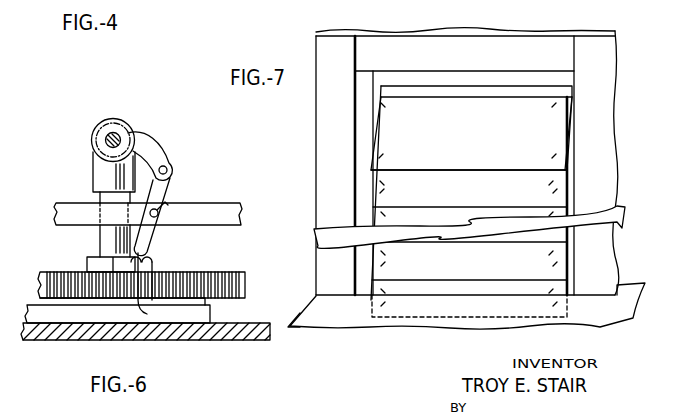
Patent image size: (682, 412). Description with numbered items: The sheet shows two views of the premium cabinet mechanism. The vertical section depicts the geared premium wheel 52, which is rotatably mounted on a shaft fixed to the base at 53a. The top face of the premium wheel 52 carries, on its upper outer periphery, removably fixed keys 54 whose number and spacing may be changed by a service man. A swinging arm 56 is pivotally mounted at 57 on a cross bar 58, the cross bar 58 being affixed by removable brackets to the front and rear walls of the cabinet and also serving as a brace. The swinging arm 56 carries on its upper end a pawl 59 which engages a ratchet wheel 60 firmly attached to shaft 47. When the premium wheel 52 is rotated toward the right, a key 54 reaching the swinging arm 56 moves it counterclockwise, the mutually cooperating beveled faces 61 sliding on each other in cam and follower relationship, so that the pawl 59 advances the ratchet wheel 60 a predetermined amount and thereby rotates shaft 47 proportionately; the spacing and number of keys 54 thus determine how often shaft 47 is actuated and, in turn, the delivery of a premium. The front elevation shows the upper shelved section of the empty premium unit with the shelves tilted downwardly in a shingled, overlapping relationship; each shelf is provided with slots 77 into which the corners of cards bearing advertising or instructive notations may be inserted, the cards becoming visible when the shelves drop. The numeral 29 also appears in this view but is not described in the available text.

In FIG. 6, the shaft 47 is at (108, 139).
In FIG. 6, the ratchet wheel 60 is at (117, 126).
In FIG. 6, the pawl 59 is at (160, 155).
In FIG. 6, the pivot 57 is at (165, 202).
In FIG. 6, the cross bar 58 is at (229, 210).
In FIG. 6, the key 54 is at (125, 262).
In FIG. 6, the swinging arm 56 is at (152, 240).
In FIG. 6, the geared premium wheel 52 is at (230, 277).
In FIG. 6, the beveled faces 61 is at (149, 289).
In FIG. 6, the base fixing 53a is at (203, 317).
In FIG. 7, the slots 77 is at (385, 163).
In FIG. 7, the louver slats 29 is at (378, 215).